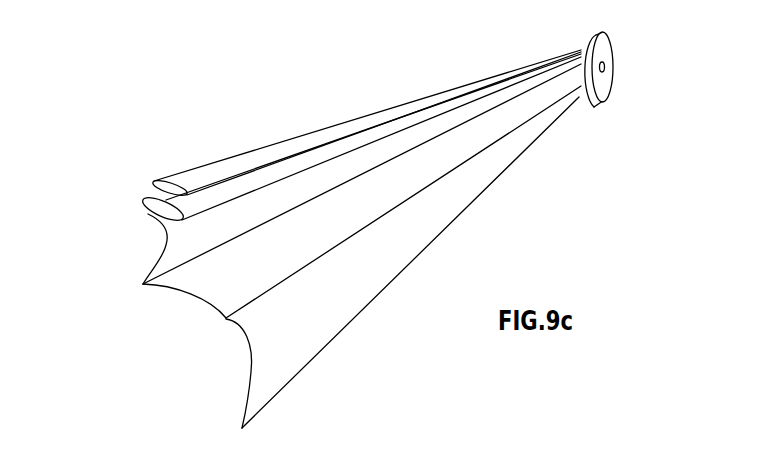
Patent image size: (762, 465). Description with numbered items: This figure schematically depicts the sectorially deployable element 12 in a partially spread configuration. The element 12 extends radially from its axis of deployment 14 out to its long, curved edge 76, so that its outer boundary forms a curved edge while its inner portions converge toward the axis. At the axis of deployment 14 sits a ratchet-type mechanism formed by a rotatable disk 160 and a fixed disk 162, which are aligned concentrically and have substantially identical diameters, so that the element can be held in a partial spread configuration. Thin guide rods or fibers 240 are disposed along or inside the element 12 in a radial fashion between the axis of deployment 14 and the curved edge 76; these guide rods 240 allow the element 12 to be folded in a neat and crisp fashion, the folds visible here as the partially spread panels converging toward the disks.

The sectorially deployable element 12 is at (318, 311).
The axis of deployment 14 is at (606, 67).
The long, curved edge 76 is at (250, 375).
The rotatable disk 160 is at (605, 47).
The fixed disk 162 is at (591, 41).
The guide rods 240 is at (143, 284).